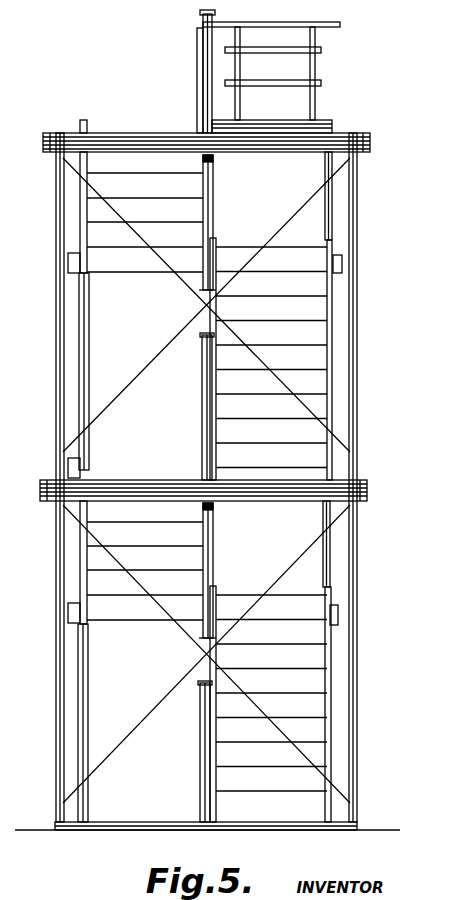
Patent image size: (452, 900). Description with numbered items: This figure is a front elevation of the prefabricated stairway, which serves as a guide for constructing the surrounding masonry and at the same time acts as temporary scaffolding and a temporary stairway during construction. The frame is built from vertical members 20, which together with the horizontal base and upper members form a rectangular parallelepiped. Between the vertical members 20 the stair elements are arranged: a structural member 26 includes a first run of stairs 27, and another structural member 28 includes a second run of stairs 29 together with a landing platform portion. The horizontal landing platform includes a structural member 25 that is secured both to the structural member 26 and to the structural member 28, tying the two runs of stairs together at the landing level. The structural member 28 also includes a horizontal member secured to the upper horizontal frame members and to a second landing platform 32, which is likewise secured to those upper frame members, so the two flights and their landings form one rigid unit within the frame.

The vertical members 20 is at (86, 296).
The structural member 25 is at (75, 264).
The structural member 26 is at (213, 322).
The first run of stairs 27 is at (298, 331).
The structural member 28 is at (86, 207).
The second run of stairs 29 is at (104, 235).
The second landing platform 32 is at (276, 142).